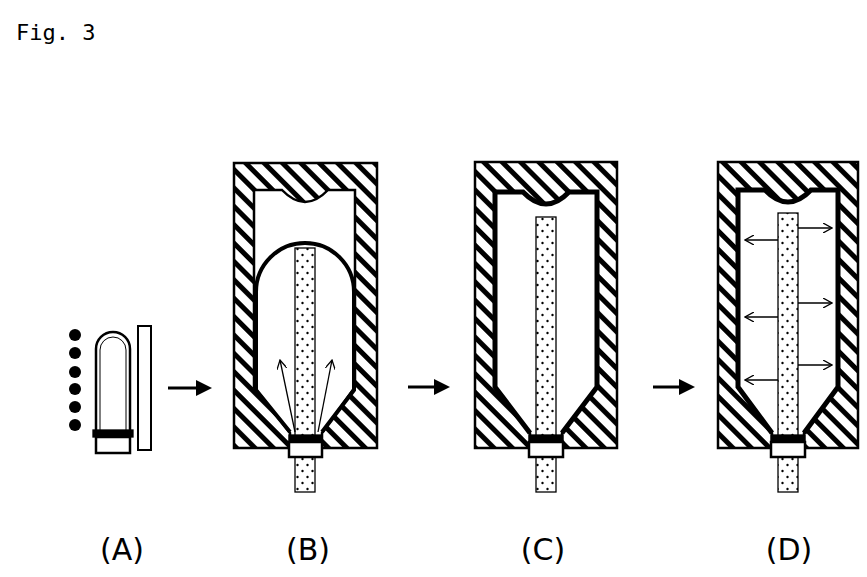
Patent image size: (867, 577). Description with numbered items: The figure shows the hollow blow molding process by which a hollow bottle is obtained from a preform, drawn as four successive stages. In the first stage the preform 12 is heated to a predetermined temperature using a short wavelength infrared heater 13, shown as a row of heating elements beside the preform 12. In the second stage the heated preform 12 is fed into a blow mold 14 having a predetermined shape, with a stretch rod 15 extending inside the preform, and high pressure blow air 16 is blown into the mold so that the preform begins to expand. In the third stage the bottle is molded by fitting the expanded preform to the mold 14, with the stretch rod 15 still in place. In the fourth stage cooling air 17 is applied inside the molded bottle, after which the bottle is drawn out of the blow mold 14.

The preform 12 is at (117, 313).
The short wavelength infrared heater 13 is at (75, 320).
The blow mold 14 is at (250, 162).
The stretch rod 15 is at (532, 232).
The blow air 16 is at (316, 376).
The cooling air 17 is at (792, 304).